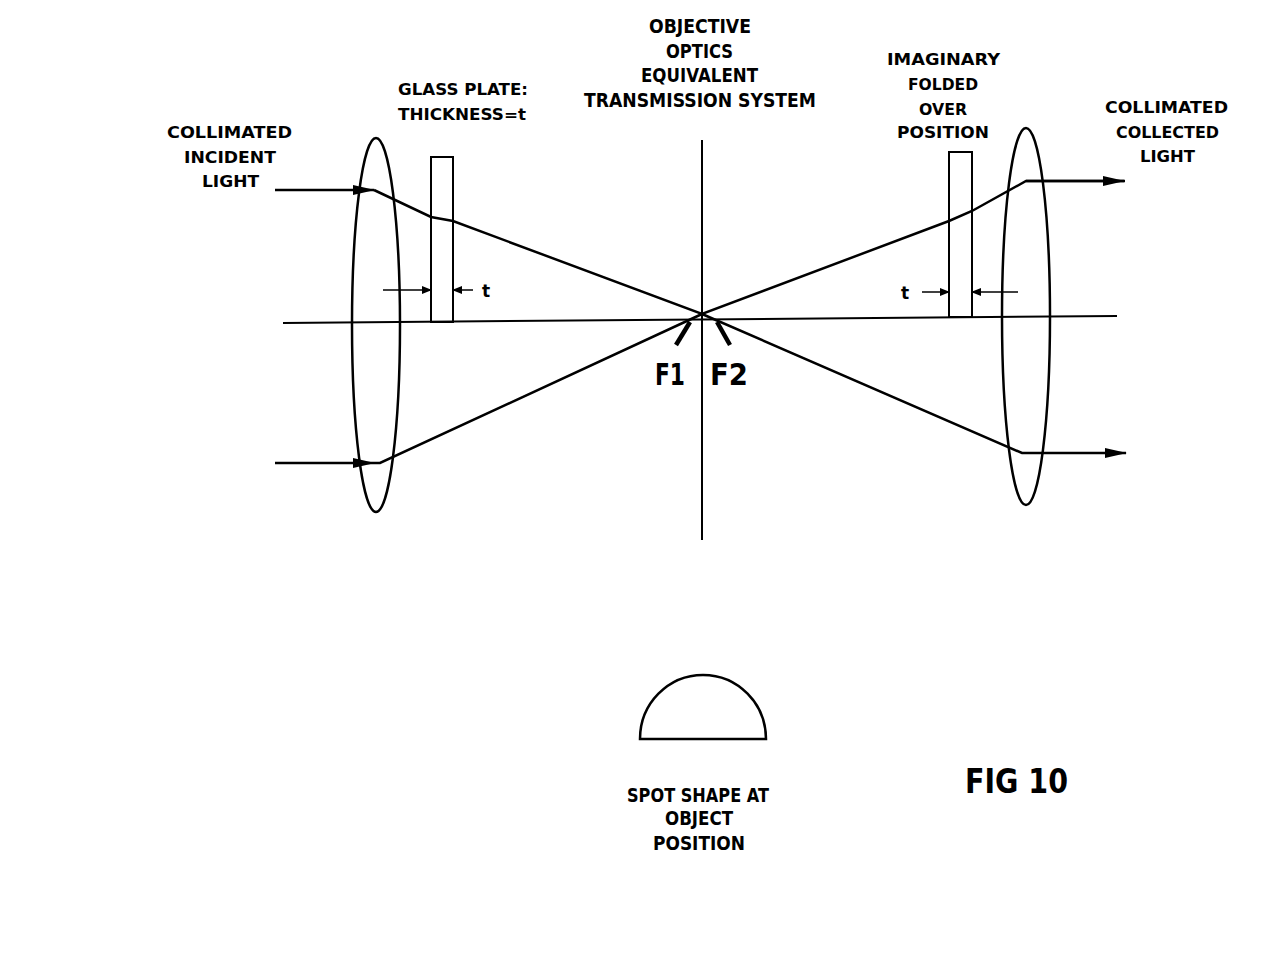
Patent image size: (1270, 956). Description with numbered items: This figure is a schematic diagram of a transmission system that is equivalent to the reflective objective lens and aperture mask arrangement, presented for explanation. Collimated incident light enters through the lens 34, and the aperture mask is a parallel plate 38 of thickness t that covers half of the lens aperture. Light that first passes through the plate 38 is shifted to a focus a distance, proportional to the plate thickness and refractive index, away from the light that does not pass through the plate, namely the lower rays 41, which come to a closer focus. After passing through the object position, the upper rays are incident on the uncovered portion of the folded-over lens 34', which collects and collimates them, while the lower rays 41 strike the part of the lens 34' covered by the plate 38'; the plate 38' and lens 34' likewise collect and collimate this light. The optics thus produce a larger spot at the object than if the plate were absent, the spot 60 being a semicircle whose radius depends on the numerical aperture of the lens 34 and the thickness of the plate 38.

The lens 34 is at (405, 327).
The lens 34' is at (997, 320).
The plate 38 is at (485, 237).
The plate 38' is at (915, 234).
The lower rays 41 is at (538, 388).
The spot 60 is at (752, 702).